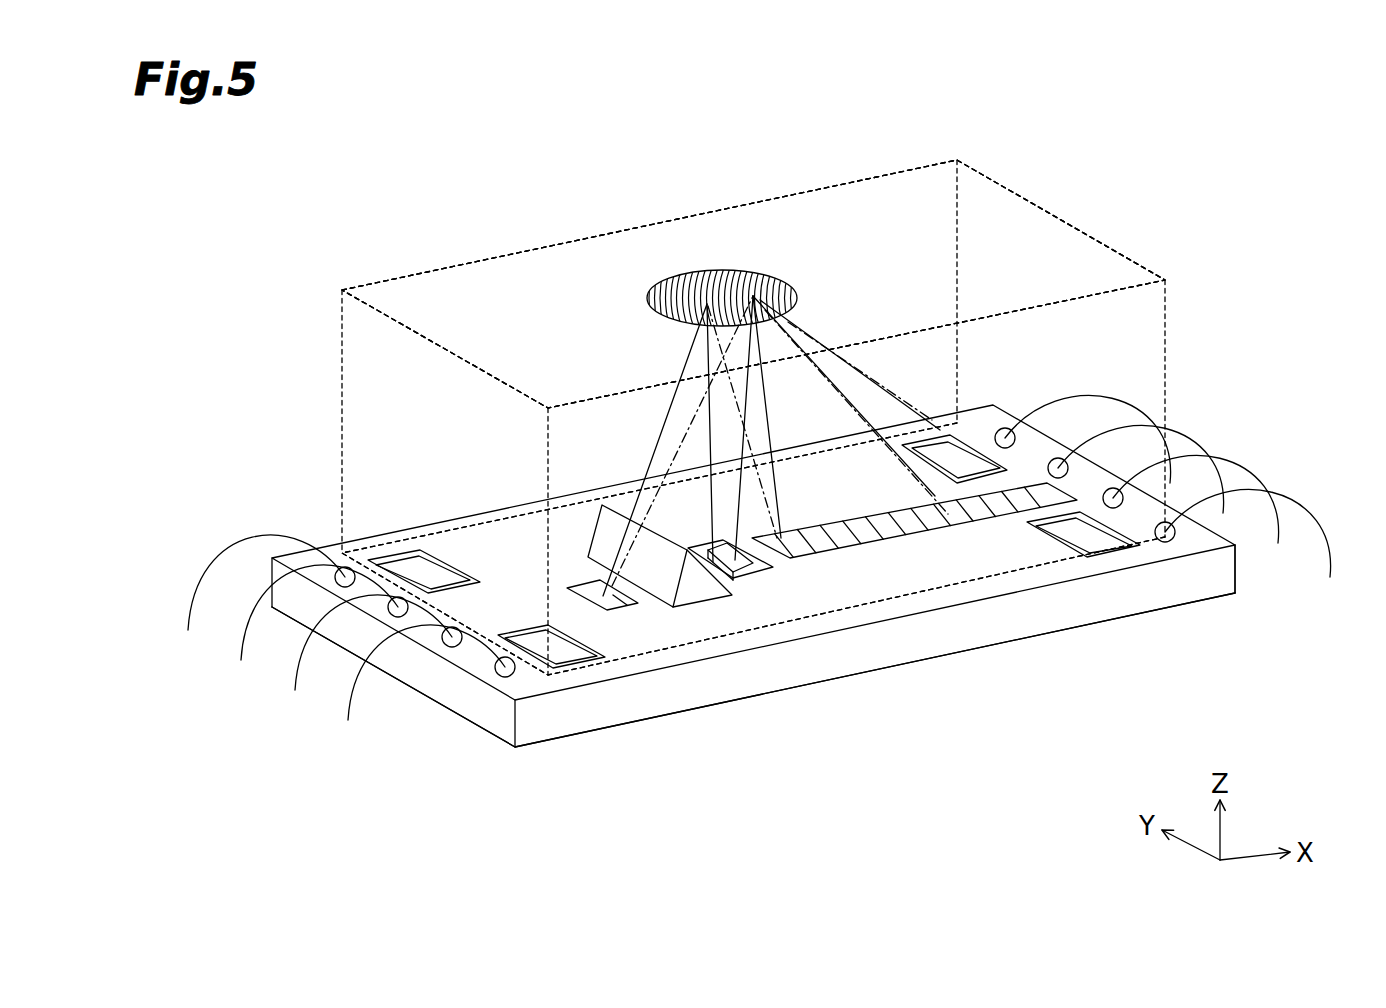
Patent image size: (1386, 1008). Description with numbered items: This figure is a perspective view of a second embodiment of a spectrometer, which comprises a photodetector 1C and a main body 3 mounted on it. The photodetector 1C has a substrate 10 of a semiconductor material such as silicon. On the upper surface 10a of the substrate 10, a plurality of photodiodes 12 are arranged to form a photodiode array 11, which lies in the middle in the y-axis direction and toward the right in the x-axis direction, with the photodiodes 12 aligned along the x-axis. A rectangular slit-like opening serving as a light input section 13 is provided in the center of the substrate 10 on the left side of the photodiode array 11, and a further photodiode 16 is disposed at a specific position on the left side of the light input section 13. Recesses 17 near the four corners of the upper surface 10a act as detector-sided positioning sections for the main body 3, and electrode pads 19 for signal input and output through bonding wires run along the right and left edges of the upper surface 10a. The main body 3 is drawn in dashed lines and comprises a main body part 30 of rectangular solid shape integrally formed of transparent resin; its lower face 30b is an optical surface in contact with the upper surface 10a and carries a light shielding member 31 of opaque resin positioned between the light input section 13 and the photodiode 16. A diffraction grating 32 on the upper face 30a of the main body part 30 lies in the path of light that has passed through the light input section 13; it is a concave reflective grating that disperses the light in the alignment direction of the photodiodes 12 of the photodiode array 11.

The main body 3 is at (483, 253).
The main body part 30 is at (848, 205).
The upper face of the main body part 30a is at (660, 247).
The lower face of the main body part 30b is at (823, 620).
The diffraction grating 32 is at (780, 286).
The substrate 10 is at (345, 568).
The upper surface of the substrate 10a is at (1140, 560).
The photodiode array 11 is at (1008, 522).
The photodiodes 12 is at (902, 545).
The light input section 13 is at (768, 573).
The photodiode 16 is at (630, 610).
The recesses 17 is at (410, 565).
The electrode pads 19 is at (447, 645).
The light shielding member 31 is at (600, 532).
The photodetector 1C is at (741, 755).